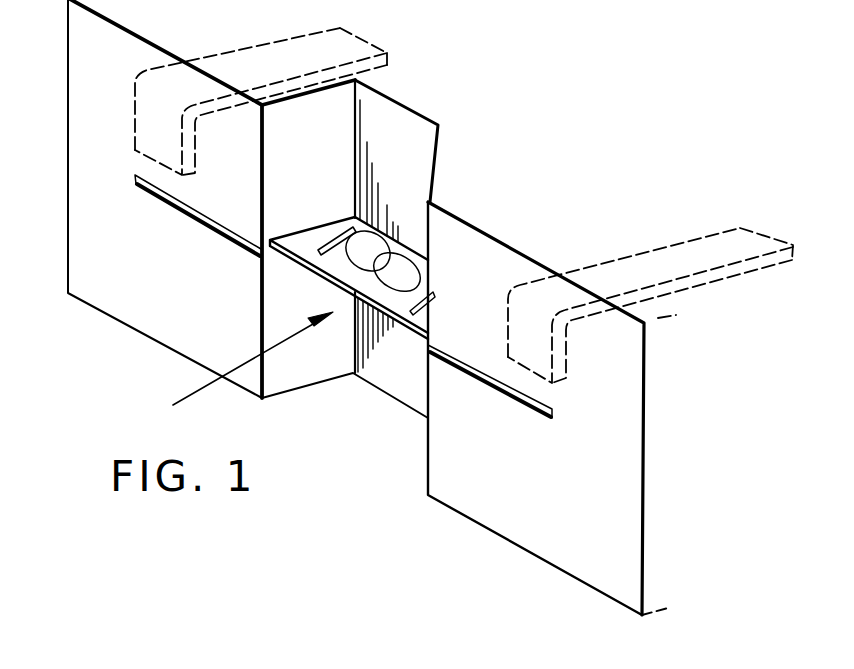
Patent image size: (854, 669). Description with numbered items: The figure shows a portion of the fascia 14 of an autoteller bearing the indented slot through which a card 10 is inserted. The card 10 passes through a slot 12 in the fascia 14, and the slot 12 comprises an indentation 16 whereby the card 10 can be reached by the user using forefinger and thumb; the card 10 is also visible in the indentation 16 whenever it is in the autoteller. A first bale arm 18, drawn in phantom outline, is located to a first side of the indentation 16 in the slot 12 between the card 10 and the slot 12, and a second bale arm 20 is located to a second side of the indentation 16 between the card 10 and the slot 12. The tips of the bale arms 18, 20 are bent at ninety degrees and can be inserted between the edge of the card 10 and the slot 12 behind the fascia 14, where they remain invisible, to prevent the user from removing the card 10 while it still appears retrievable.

The card 10 is at (328, 273).
The slot 12 is at (207, 225).
The fascia 14 is at (123, 280).
The indentation 16 is at (407, 492).
The first bale arm 18 is at (352, 30).
The second bale arm 20 is at (678, 242).